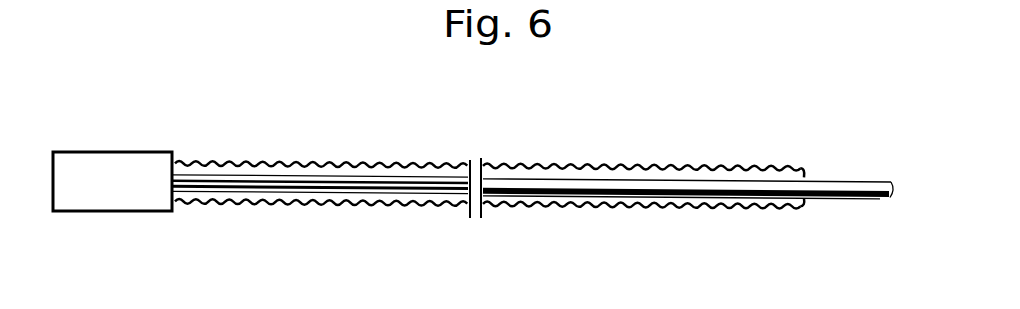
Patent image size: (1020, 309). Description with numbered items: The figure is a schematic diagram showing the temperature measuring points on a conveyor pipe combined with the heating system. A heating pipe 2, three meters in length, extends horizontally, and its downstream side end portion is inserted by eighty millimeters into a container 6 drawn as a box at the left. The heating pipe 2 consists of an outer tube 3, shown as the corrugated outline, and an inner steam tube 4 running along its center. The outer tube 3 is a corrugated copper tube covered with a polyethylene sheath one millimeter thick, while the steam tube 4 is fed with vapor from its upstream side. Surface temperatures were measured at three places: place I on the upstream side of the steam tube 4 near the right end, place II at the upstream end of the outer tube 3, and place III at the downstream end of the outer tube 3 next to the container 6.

The container 6 is at (122, 203).
The heating pipe 2 is at (398, 161).
The outer tube 3 is at (350, 202).
The steam tube 4 is at (322, 188).
The temperature measuring place III is at (190, 205).
The temperature measuring place II is at (770, 207).
The temperature measuring place I is at (877, 198).